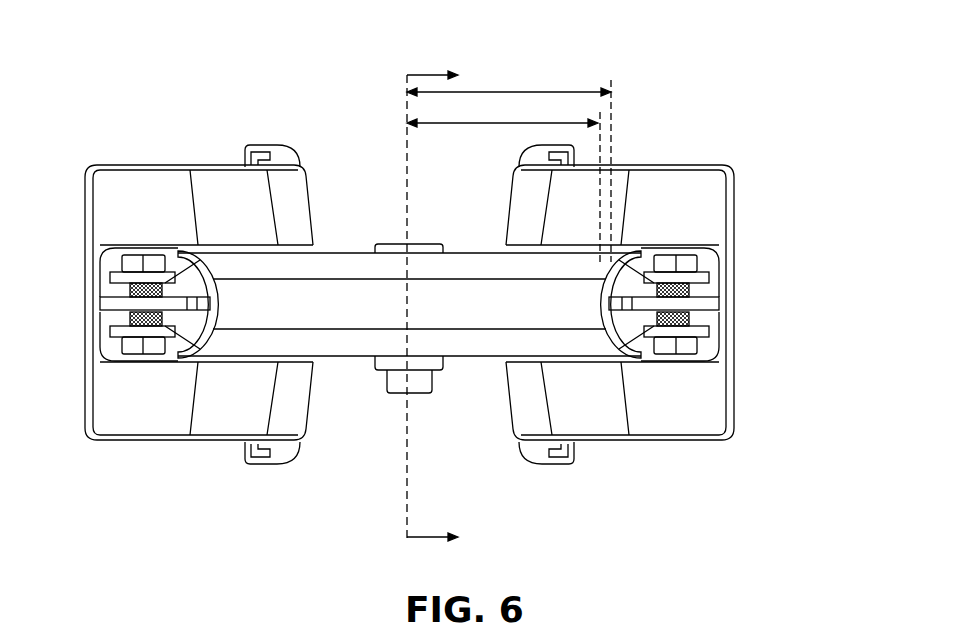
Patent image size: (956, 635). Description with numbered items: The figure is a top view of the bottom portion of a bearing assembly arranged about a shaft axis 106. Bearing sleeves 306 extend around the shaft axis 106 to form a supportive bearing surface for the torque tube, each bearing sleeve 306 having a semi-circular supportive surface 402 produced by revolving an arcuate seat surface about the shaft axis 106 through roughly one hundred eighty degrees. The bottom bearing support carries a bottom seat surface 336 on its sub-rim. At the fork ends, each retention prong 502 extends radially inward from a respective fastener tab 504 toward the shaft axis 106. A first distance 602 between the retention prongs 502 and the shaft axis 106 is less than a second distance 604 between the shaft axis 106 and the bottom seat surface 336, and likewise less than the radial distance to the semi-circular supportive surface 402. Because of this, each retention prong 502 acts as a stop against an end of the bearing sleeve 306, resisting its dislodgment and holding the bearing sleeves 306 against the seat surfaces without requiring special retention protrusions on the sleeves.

The shaft axis 106 is at (395, 306).
The bearing sleeve 306 is at (337, 262).
The bottom seat surface 336 is at (727, 376).
The semi-circular supportive surface 402 is at (558, 297).
The retention prong 502 is at (235, 315).
The fastener tab 504 is at (133, 273).
The first distance 602 is at (458, 125).
The second distance 604 is at (560, 92).